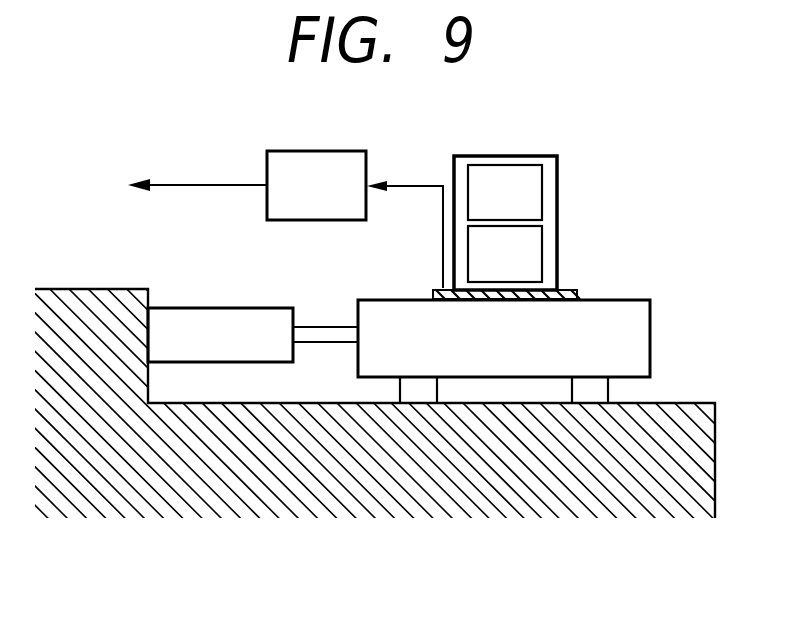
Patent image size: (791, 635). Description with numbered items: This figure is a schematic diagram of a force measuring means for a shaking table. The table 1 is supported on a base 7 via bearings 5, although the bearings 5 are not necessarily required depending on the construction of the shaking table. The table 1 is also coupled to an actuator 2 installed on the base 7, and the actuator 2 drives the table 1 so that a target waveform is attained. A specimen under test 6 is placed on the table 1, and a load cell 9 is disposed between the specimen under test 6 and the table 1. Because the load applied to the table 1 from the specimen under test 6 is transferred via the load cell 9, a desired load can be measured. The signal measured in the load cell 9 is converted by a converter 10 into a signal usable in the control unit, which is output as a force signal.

The table 1 is at (652, 320).
The actuator 2 is at (257, 363).
The bearings 5 is at (574, 390).
The specimen under test 6 is at (558, 180).
The base 7 is at (143, 512).
The load cell 9 is at (568, 287).
The converter 10 is at (328, 150).